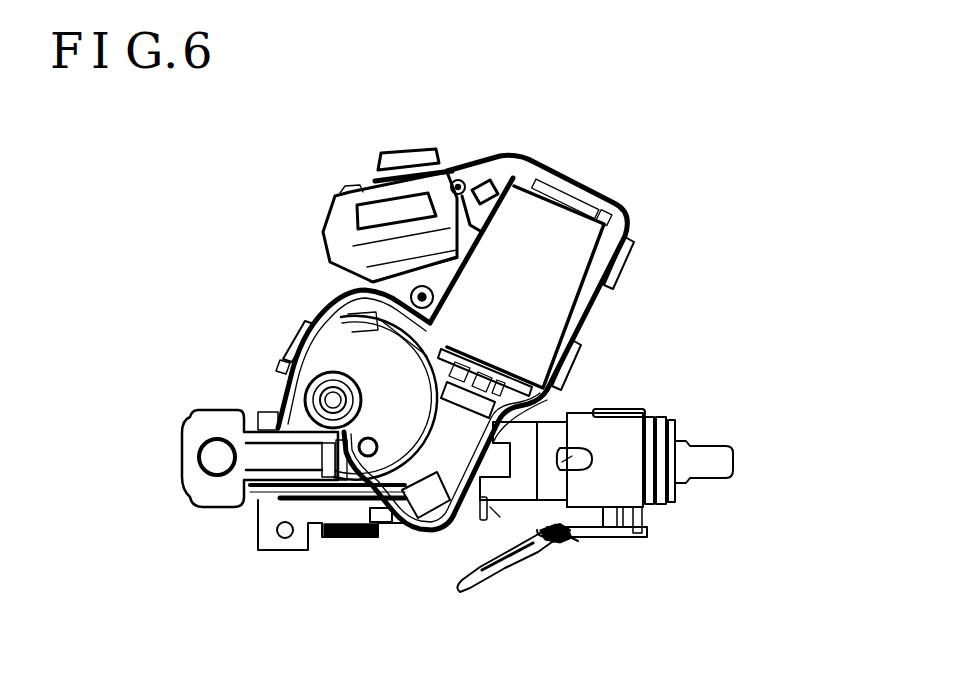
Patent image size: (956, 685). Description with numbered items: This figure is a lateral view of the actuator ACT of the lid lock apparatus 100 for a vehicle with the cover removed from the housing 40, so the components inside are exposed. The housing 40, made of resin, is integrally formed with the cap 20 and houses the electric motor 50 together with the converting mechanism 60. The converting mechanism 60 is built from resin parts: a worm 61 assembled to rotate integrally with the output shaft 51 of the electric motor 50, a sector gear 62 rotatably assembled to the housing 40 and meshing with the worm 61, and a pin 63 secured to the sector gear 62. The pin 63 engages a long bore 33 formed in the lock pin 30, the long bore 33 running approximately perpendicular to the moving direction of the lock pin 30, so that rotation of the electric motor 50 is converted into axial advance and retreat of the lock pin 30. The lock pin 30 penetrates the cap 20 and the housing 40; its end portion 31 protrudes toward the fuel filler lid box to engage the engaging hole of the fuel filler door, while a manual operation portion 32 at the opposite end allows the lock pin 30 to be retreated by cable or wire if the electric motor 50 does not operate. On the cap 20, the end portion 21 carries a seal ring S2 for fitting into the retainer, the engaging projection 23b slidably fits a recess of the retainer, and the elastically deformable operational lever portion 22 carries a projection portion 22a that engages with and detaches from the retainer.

The lid lock apparatus 100 is at (280, 343).
The actuator ACT is at (526, 156).
The electric motor 50 is at (603, 207).
The output shaft 51 is at (478, 376).
The converting mechanism 60 is at (436, 350).
The worm 61 is at (452, 515).
The sector gear 62 is at (348, 296).
The pin 63 is at (369, 437).
The cap 20 is at (630, 404).
The end portion 21 is at (668, 508).
The operational lever portion 22 is at (473, 592).
The projection portion 22a is at (577, 542).
The engaging projection 23b is at (559, 462).
The seal ring S2 is at (652, 416).
The lock pin 30 is at (721, 434).
The end portion 31 is at (734, 459).
The manual operation portion 32 is at (207, 500).
The long bore 33 is at (381, 524).
The housing 40 is at (292, 556).